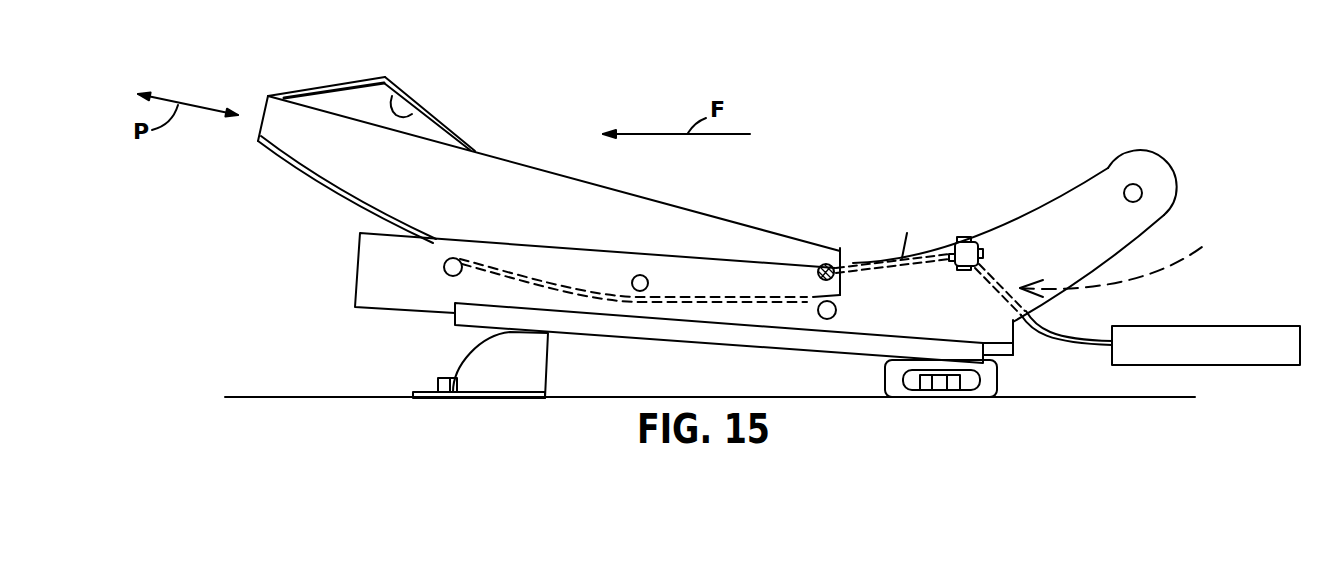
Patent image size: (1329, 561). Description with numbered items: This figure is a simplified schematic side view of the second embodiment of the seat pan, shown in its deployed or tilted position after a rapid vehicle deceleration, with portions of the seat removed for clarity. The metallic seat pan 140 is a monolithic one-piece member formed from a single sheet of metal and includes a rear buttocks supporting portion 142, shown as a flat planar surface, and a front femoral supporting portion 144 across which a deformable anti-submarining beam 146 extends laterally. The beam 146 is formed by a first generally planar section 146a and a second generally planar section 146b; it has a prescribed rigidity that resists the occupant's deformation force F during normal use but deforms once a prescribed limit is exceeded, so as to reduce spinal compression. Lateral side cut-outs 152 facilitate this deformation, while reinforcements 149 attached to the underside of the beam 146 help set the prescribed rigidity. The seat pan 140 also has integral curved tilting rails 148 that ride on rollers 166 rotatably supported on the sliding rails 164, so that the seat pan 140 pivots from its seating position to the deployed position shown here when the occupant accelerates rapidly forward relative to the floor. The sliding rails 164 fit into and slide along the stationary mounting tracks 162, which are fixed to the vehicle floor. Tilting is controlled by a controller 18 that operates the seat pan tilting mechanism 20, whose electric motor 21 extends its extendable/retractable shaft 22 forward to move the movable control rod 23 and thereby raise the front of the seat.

The controller 18 is at (1194, 325).
The seat pan tilting mechanism 20 is at (1132, 254).
The electric motor 21 is at (982, 217).
The extendable/retractable shaft 22 is at (915, 210).
The movable control rod 23 is at (830, 260).
The metallic seat pan 140 is at (520, 155).
The rear buttocks supporting portion 142 is at (600, 179).
The front femoral supporting portion 144 is at (288, 95).
The deformable anti-submarining beam 146 is at (414, 82).
The first generally planar section 146a is at (453, 127).
The second generally planar section 146b is at (347, 79).
The curved tilting rails 148 is at (322, 188).
The reinforcements 149 is at (418, 120).
The lateral side cut-outs 152 is at (348, 112).
The stationary mounting tracks 162 is at (487, 352).
The sliding rails 164 is at (372, 264).
The rollers 166 is at (456, 262).